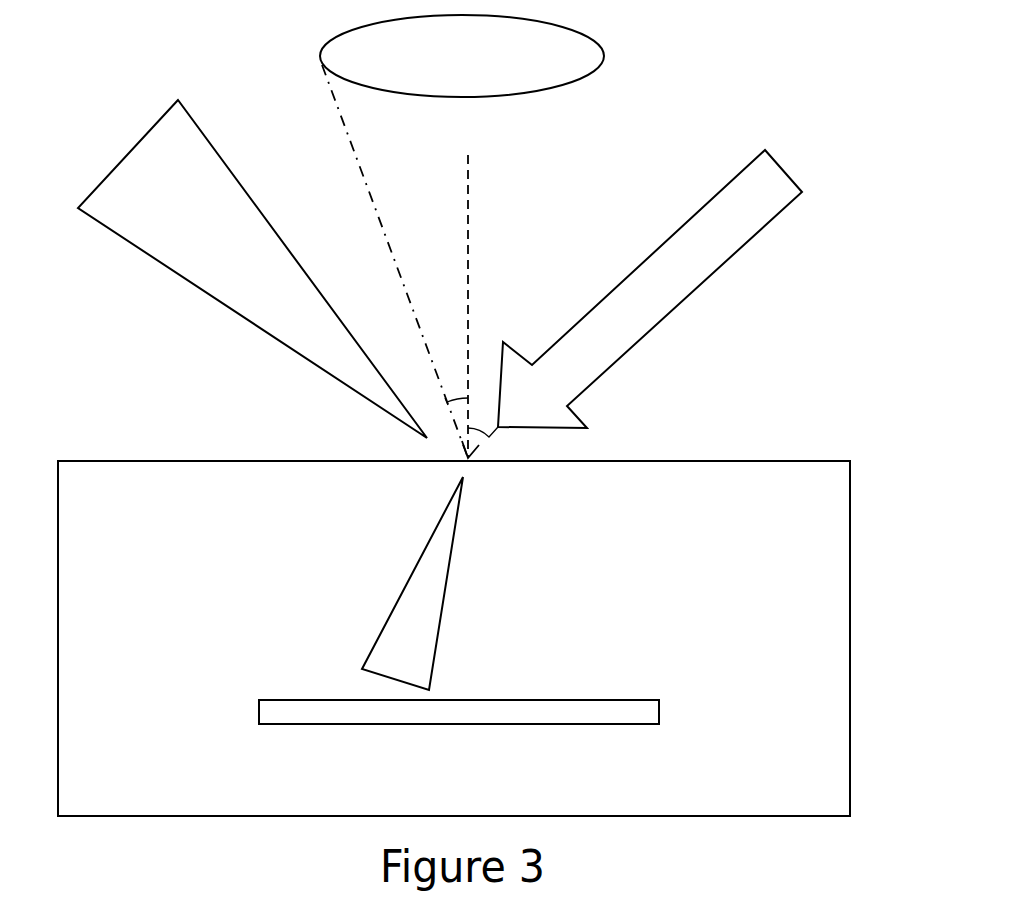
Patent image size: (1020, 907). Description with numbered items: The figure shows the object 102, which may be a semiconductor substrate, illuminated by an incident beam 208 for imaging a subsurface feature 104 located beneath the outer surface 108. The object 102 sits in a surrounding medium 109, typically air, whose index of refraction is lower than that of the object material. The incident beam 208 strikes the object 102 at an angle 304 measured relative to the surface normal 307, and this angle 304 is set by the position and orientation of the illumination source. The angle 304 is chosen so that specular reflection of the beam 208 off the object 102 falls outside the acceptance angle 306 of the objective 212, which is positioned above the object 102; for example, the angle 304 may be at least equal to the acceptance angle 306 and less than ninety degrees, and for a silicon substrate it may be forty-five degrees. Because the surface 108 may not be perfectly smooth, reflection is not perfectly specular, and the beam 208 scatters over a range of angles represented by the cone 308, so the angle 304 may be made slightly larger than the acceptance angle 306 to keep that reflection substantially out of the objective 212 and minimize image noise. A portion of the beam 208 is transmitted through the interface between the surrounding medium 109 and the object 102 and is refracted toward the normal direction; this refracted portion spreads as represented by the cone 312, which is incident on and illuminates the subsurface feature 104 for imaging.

The objective 212 is at (603, 45).
The cone 308 is at (197, 123).
The surface normal 307 is at (470, 188).
The acceptance angle 306 is at (445, 347).
The angle 304 is at (483, 345).
The incident beam 208 is at (792, 178).
The surrounding medium 109 is at (823, 338).
The outer surface 108 is at (168, 461).
The object 102 is at (752, 461).
The cone 312 is at (450, 568).
The subsurface feature 104 is at (588, 700).